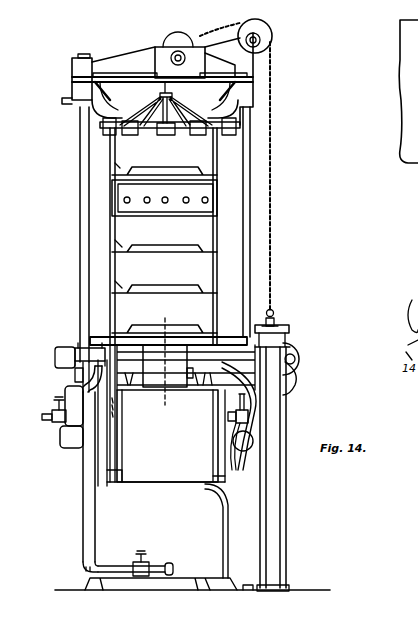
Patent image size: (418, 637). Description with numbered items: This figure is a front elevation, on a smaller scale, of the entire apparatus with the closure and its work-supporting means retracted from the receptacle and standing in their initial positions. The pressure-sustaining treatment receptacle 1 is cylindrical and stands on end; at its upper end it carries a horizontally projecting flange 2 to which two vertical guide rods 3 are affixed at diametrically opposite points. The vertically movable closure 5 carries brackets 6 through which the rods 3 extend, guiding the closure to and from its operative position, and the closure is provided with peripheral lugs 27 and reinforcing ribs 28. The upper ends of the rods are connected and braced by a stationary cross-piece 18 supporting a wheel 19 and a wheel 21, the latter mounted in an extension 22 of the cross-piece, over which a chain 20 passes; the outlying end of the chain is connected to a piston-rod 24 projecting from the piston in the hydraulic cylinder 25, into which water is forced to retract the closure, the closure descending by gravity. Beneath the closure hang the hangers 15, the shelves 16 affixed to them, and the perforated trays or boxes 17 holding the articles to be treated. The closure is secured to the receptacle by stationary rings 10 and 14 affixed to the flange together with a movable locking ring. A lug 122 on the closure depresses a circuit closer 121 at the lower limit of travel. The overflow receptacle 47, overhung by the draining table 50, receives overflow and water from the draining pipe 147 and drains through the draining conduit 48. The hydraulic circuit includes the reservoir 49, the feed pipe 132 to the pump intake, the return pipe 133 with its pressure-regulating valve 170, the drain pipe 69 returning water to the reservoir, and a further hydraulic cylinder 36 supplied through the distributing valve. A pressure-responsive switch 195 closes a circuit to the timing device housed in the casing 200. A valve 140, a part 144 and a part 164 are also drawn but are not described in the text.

The pressure-sustaining treatment receptacle 1 is at (143, 436).
The horizontally projecting flange 2 is at (75, 378).
The vertical guide rods 3 is at (82, 237).
The vertically movable closure 5 is at (160, 95).
The brackets 6 is at (165, 99).
The stationary ring 10 is at (88, 371).
The stationary ring 14 is at (80, 348).
The hangers 15 is at (212, 149).
The shelves 16 is at (121, 252).
The perforated trays or boxes 17 is at (155, 215).
The stationary cross-piece 18 is at (118, 60).
The wheel 19 is at (175, 40).
The chain 20 is at (230, 27).
The wheel 21 is at (264, 30).
The extension of the cross-piece 22 is at (268, 50).
The piston-rod 24 is at (276, 324).
The hydraulic cylinder 25 is at (275, 500).
The lugs 27 is at (130, 135).
The reinforcing ribs 28 is at (202, 110).
The hydraulic cylinder 36 is at (298, 346).
The overflow receptacle 47 is at (172, 388).
The draining conduit 48 is at (85, 513).
The reservoir 49 is at (154, 484).
The draining table 50 is at (224, 340).
The drain pipe 69 is at (230, 424).
The circuit closer 121 is at (70, 347).
The lug 122 is at (60, 100).
The feed pipe 132 is at (234, 530).
The return pipe 133 is at (236, 462).
The valve 140 is at (121, 562).
The coupling 144 is at (255, 441).
The draining pipe 147 is at (249, 406).
The loop 164 is at (301, 370).
The pressure-regulating valve 170 is at (250, 417).
The pressure-responsive switch 195 is at (68, 402).
The casing 200 is at (62, 430).